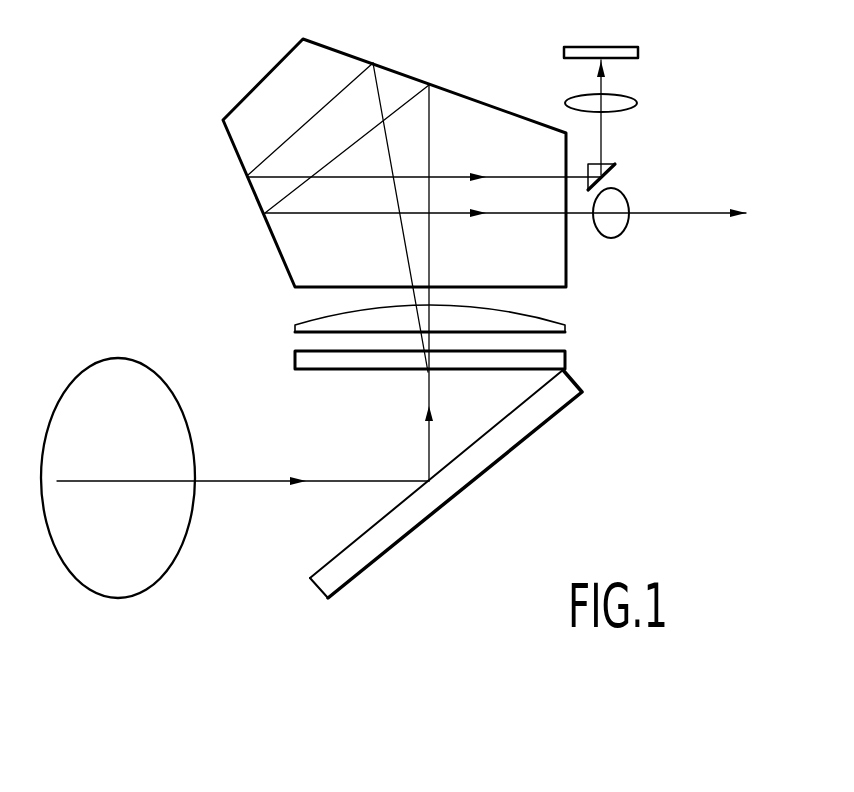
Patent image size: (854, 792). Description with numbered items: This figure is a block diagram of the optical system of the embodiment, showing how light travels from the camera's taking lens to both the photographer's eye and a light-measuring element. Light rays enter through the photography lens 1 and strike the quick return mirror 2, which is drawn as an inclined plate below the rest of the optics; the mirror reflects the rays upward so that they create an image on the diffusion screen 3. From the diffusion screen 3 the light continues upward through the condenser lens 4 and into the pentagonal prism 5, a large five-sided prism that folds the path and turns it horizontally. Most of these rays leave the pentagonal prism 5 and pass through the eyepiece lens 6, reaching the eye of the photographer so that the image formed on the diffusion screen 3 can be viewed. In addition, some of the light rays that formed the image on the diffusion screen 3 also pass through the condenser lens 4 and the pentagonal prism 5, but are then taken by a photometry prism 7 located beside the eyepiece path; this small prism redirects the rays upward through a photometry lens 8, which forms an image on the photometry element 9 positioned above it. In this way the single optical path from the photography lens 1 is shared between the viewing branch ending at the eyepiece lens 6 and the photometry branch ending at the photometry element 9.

The photography lens 1 is at (152, 587).
The quick return mirror 2 is at (533, 432).
The diffusion screen 3 is at (565, 360).
The condenser lens 4 is at (565, 325).
The pentagonal prism 5 is at (453, 92).
The eyepiece lens 6 is at (623, 232).
The photometry prism 7 is at (615, 164).
The photometry lens 8 is at (637, 100).
The photometry element 9 is at (638, 50).